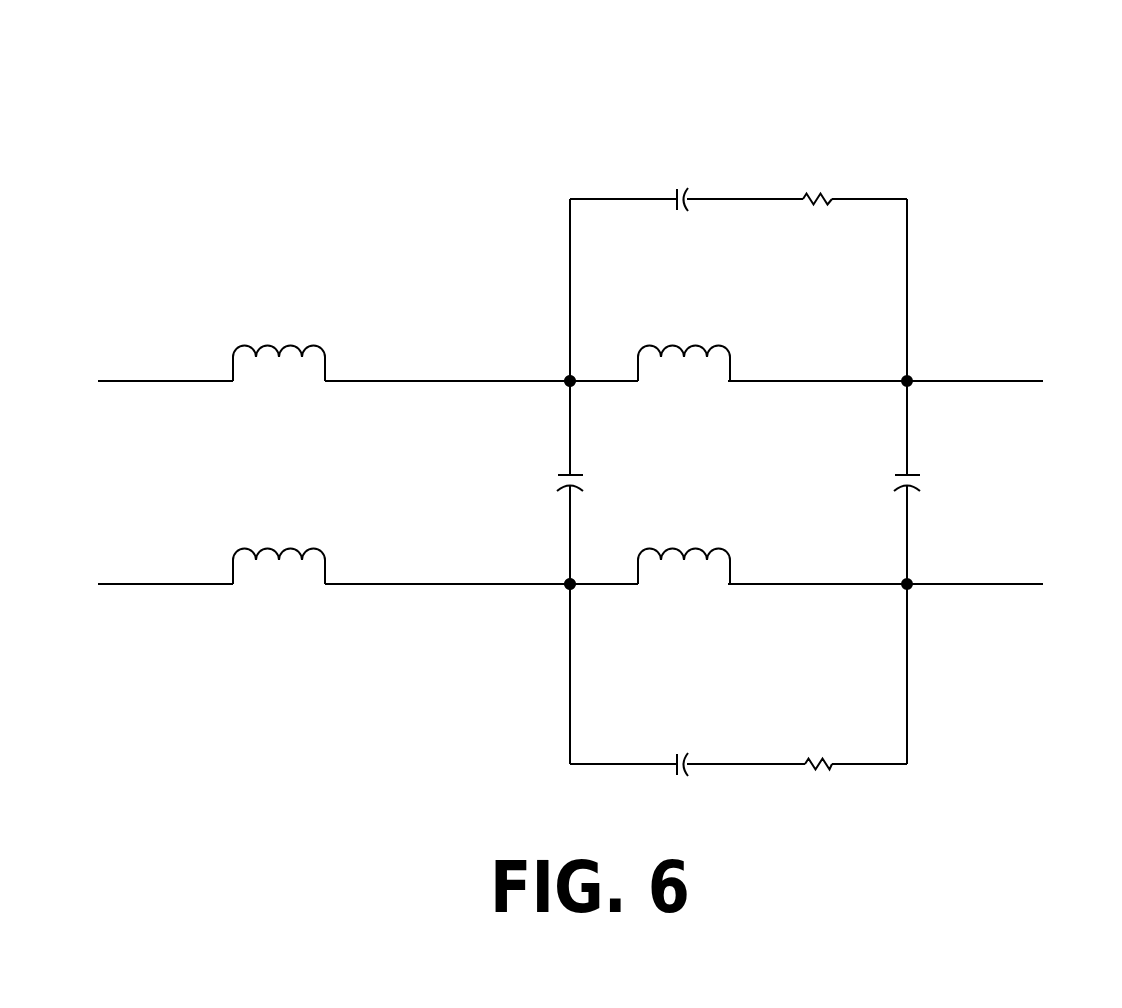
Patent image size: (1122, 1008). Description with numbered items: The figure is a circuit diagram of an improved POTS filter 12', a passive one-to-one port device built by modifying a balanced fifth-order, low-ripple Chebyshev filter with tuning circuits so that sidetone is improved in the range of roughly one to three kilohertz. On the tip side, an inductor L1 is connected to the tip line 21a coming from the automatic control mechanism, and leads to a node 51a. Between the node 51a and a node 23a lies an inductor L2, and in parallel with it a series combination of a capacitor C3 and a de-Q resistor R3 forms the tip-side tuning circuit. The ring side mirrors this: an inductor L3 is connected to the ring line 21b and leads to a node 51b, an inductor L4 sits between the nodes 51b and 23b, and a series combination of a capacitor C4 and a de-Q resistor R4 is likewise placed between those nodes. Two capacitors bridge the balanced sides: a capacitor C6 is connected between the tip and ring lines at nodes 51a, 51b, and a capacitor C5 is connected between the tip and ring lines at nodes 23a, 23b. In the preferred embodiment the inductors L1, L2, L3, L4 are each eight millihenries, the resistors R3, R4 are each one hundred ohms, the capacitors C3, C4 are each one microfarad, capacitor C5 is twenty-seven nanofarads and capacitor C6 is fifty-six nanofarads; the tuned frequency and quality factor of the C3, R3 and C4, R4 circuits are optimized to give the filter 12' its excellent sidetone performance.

The improved POTS filter 12' is at (578, 417).
The tip line 21a is at (188, 381).
The ring line 21b is at (188, 584).
The node 23a is at (928, 381).
The node 23b is at (928, 584).
The node 51a is at (570, 381).
The node 51b is at (570, 584).
The inductor L1 is at (279, 345).
The inductor L2 is at (684, 344).
The inductor L3 is at (279, 551).
The inductor L4 is at (684, 547).
The capacitor C3 is at (682, 180).
The capacitor C4 is at (683, 748).
The capacitor C5 is at (936, 481).
The capacitor C6 is at (600, 482).
The de-Q resistor R3 is at (817, 185).
The de-Q resistor R4 is at (818, 747).